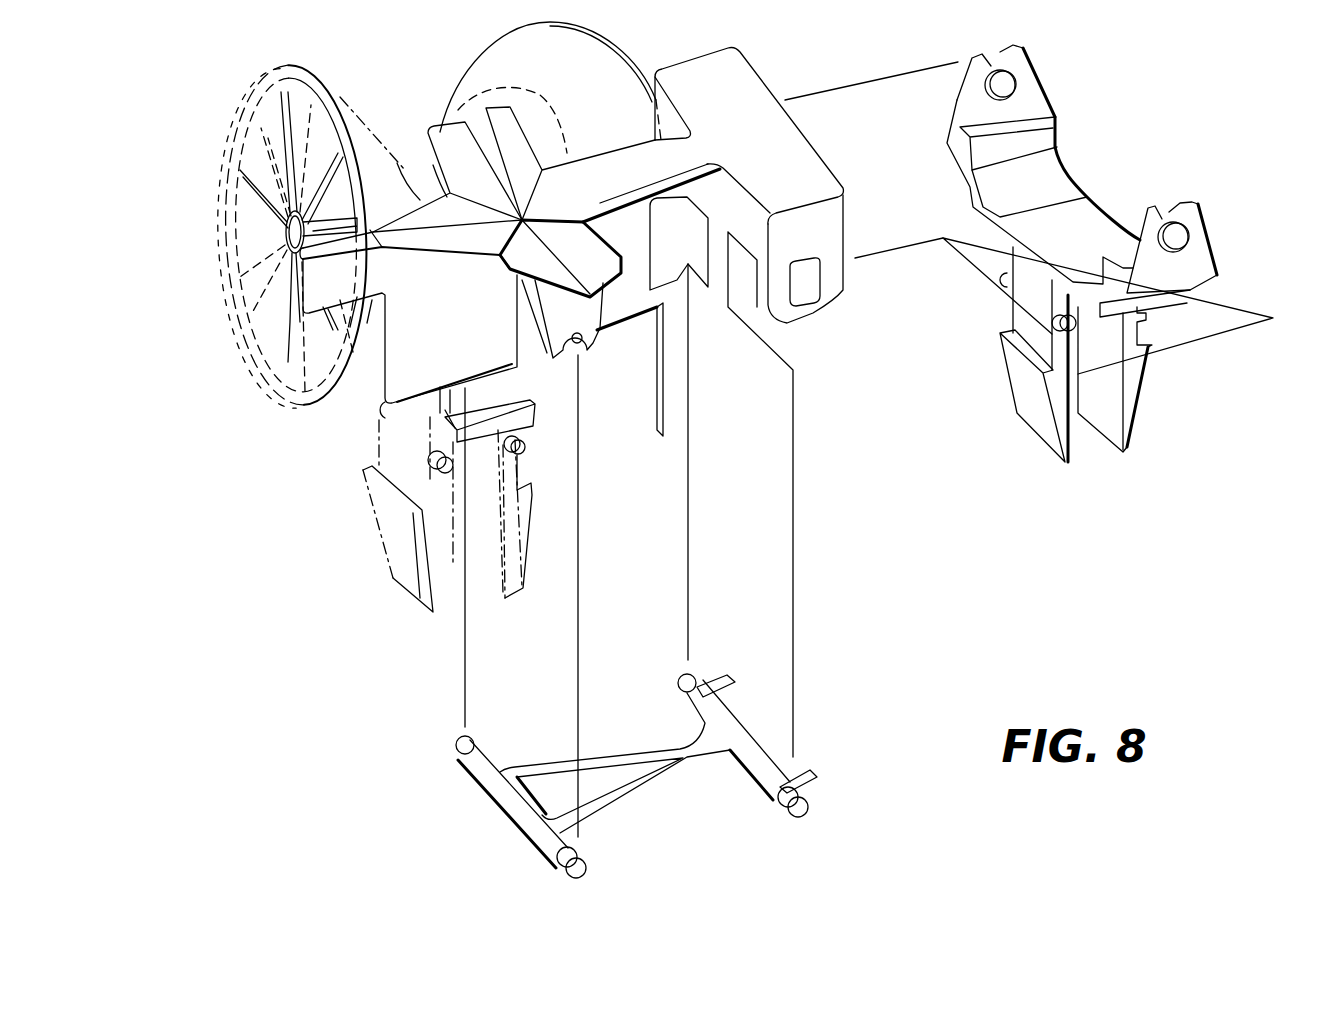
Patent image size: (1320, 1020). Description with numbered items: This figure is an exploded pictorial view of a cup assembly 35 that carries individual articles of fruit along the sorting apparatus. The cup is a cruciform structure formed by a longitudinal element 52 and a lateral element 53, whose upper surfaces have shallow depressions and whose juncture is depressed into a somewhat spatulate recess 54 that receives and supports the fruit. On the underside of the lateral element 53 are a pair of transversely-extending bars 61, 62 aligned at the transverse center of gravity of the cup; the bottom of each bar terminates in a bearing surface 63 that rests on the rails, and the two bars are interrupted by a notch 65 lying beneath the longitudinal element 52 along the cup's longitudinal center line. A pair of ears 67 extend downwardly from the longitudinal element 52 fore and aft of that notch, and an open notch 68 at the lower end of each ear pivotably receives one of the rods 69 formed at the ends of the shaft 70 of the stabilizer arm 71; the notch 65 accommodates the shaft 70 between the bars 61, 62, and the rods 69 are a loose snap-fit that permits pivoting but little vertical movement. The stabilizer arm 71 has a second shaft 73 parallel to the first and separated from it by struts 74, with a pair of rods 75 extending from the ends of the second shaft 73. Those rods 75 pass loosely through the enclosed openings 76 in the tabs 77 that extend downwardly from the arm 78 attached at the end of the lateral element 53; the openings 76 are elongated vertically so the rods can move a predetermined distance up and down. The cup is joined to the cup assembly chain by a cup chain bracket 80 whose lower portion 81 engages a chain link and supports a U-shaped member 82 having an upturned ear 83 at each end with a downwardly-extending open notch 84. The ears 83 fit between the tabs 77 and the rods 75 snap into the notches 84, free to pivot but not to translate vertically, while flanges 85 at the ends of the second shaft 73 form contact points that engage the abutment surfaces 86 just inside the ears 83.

The cup assembly 35 is at (416, 84).
The longitudinal element 52 is at (452, 133).
The lateral element 53 is at (470, 237).
The spatulate recess 54 is at (522, 170).
The transversely-extending bar 61 is at (385, 364).
The transversely-extending bar 62 is at (620, 310).
The bearing surface 63 is at (412, 377).
The notch 65 is at (533, 337).
The ear 67 is at (557, 310).
The open notch 68 is at (578, 350).
The rod 69 is at (460, 737).
The shaft 70 is at (497, 813).
The stabilizer arm 71 is at (662, 808).
The second shaft 73 is at (737, 733).
The strut 74 is at (613, 753).
The rod 75 is at (682, 680).
The enclosed opening 76 is at (800, 300).
The tab 77 is at (830, 247).
The arm 78 is at (757, 90).
The cup chain bracket 80 is at (954, 356).
The lower portion 81 is at (1035, 437).
The U-shaped member 82 is at (1073, 162).
The ear 83 is at (1033, 72).
The open notch 84 is at (991, 63).
The flange 85 is at (738, 695).
The abutment surface 86 is at (1043, 110).